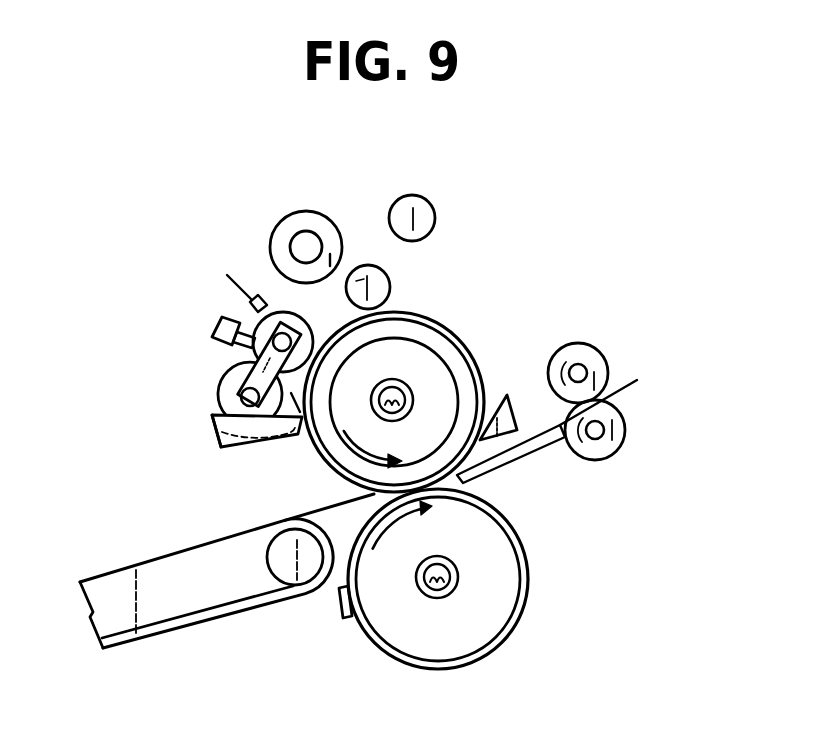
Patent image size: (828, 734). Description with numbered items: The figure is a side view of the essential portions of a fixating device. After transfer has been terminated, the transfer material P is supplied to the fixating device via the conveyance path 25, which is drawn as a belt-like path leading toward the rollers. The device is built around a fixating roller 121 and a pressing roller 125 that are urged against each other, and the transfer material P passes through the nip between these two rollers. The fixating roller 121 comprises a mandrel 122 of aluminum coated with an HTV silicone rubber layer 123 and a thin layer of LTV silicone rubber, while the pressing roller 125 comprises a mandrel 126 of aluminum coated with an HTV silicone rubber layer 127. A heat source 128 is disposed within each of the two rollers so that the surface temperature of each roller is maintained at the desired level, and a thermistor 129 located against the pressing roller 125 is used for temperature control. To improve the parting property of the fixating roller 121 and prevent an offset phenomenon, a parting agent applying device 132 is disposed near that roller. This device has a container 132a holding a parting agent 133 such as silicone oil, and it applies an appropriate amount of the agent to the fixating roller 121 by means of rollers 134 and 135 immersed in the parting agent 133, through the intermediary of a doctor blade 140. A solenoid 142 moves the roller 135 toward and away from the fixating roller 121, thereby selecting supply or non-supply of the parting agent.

The conveyance path 25 is at (125, 556).
The fixating roller 121 is at (413, 366).
The mandrel 122 is at (412, 338).
The HTV silicone rubber layer 123 is at (463, 383).
The pressing roller 125 is at (462, 585).
The mandrel 126 is at (488, 543).
The HTV silicone rubber layer 127 is at (488, 645).
The heat source 128 is at (413, 378).
The thermistor 129 is at (345, 618).
The parting agent applying device 132 is at (188, 381).
The container 132a is at (213, 432).
The parting agent 133 is at (228, 448).
The roller 134 is at (220, 390).
The roller 135 is at (238, 316).
The doctor blade 140 is at (266, 300).
The solenoid 142 is at (213, 330).
The recording paper P is at (637, 383).